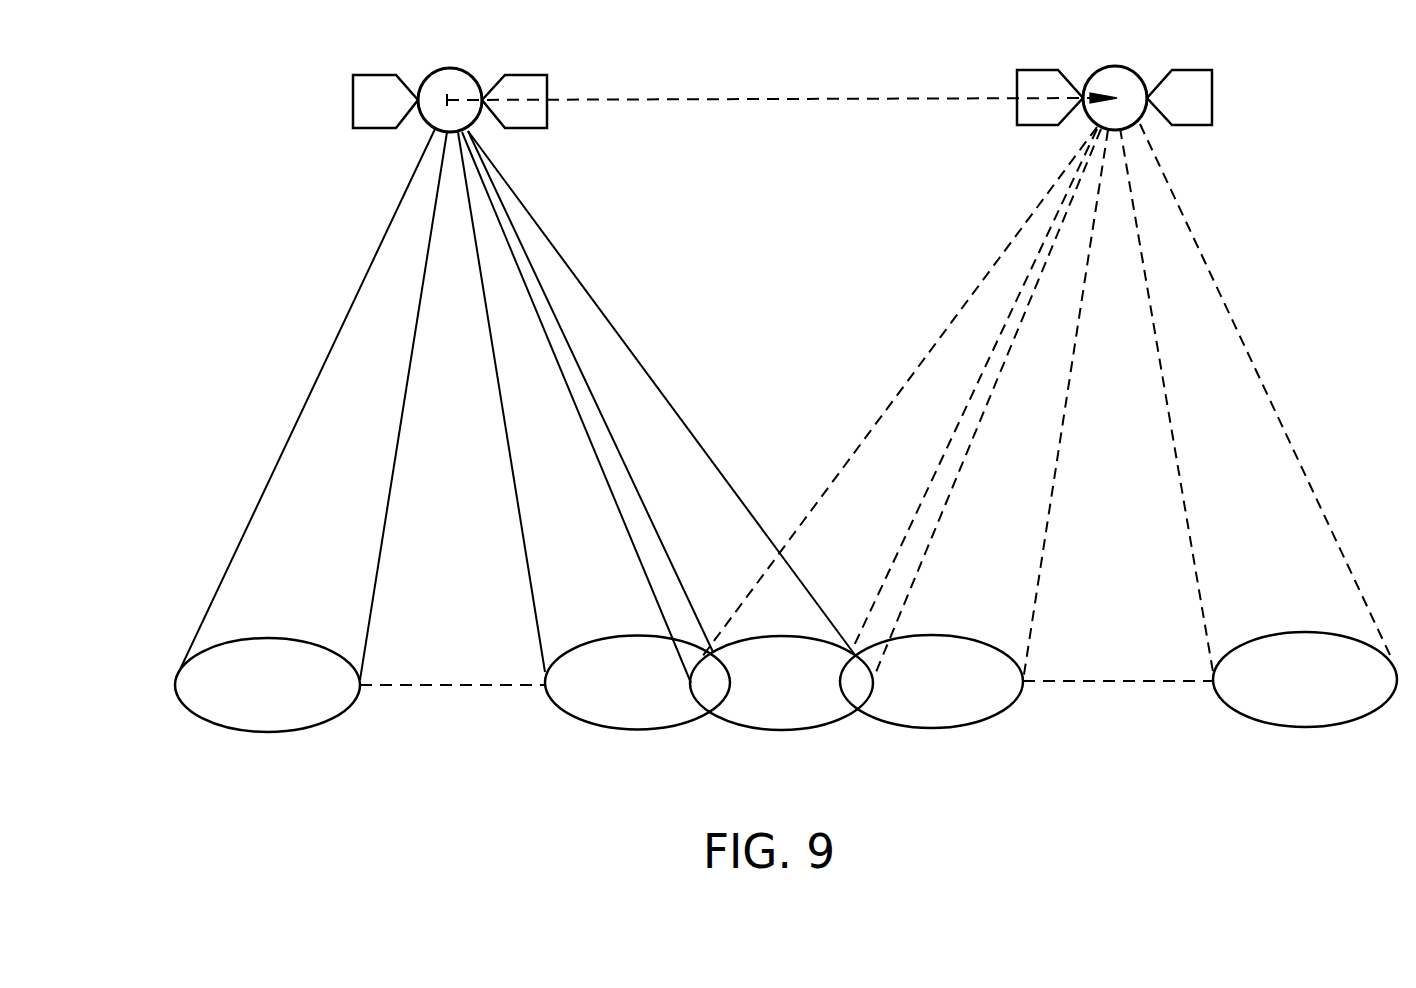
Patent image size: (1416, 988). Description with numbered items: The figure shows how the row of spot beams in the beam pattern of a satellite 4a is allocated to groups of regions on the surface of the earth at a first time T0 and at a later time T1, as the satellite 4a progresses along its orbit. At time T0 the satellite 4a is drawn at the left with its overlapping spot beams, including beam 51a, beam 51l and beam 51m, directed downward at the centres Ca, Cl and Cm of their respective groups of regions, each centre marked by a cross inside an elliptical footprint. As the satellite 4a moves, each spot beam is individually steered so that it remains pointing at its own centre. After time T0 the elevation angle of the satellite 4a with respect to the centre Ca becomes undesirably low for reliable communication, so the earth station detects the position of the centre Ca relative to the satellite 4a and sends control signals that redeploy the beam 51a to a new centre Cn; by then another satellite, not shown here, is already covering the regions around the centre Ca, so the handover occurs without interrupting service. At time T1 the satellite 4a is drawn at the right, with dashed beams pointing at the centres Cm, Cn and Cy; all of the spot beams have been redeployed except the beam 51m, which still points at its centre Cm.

The satellite 4a is at (547, 75).
The spot beam 51a is at (343, 512).
The spot beam 51l is at (588, 512).
The spot beam 51m is at (732, 512).
The time T0 is at (450, 76).
The time T1 is at (1115, 73).
The centre Ca is at (292, 692).
The centre Cl is at (636, 688).
The centre Cm is at (806, 691).
The centre Cn is at (958, 690).
The centre Cy is at (1348, 690).